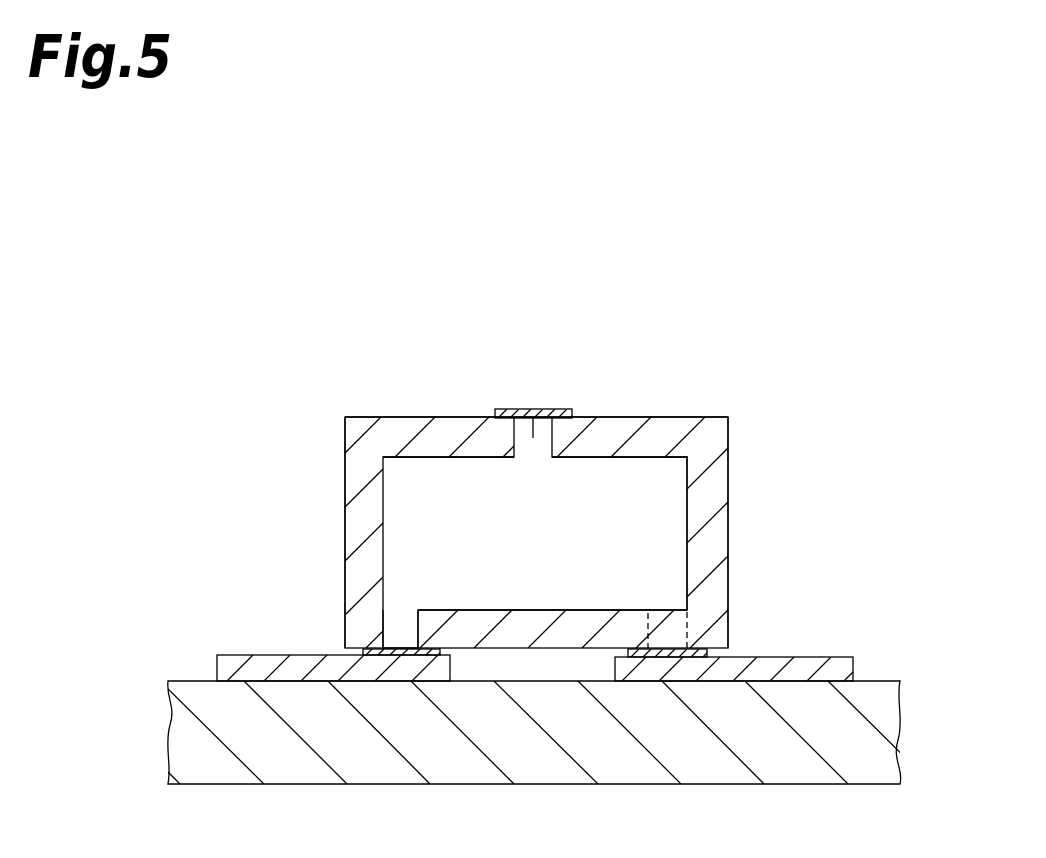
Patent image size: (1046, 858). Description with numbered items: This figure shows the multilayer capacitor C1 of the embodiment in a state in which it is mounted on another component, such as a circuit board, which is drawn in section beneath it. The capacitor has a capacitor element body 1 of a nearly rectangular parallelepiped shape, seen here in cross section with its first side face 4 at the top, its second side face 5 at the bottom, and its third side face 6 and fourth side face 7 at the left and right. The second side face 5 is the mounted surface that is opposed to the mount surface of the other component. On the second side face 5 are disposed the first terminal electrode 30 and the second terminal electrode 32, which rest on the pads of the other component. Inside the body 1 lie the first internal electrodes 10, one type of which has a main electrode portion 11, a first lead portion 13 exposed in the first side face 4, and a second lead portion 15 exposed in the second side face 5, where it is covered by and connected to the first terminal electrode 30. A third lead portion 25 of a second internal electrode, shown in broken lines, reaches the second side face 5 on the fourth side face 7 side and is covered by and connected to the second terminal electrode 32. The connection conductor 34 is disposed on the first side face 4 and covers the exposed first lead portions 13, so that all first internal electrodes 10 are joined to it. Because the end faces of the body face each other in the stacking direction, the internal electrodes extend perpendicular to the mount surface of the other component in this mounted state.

The capacitor element body 1 is at (345, 417).
The first side face 4 is at (413, 417).
The second side face 5 is at (512, 650).
The third side face 6 is at (345, 553).
The fourth side face 7 is at (727, 553).
The first internal electrode 10 is at (653, 455).
The main electrode portion 11 is at (603, 530).
The first lead portion 13 is at (533, 418).
The second lead portion 15 is at (397, 628).
The third lead portion 25 is at (672, 632).
The first terminal electrode 30 is at (407, 655).
The second terminal electrode 32 is at (670, 653).
The connection conductor 34 is at (520, 410).
The multilayer capacitor C1 is at (663, 338).